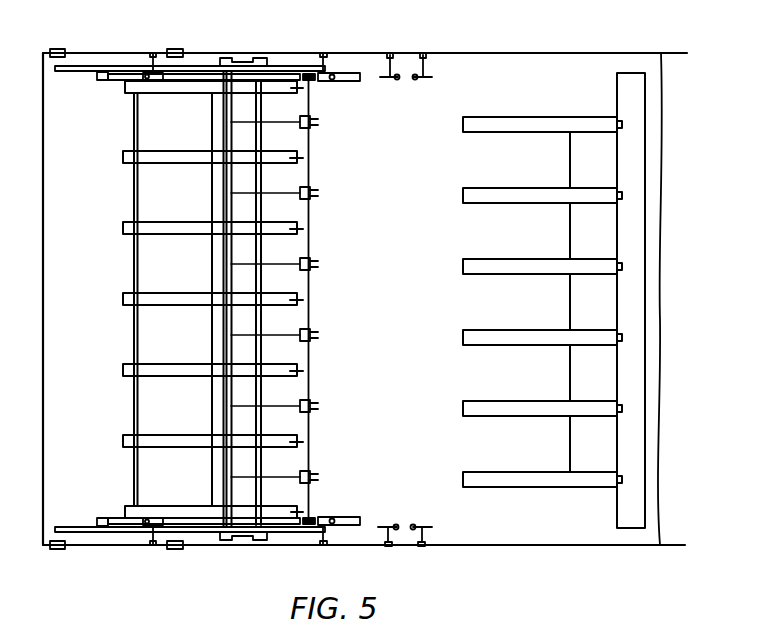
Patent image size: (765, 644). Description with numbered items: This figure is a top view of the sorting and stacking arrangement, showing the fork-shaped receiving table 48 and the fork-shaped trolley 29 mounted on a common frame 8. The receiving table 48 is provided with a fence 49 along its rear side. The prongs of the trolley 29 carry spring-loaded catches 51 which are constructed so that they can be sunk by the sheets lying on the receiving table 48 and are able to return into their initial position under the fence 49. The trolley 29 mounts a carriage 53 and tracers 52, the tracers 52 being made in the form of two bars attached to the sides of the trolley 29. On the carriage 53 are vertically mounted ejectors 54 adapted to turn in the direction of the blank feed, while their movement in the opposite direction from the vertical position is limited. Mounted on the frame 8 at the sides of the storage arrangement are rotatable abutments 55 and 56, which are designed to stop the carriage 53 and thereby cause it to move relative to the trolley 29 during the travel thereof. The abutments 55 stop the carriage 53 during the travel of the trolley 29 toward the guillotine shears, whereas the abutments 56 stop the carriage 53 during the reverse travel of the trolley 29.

The frame 8 is at (672, 53).
The trolley 29 is at (147, 201).
The receiving table 48 is at (552, 479).
The fence 49 is at (627, 514).
The spring-loaded catches 51 is at (300, 231).
The tracers 52 is at (118, 76).
The carriage 53 is at (222, 489).
The ejectors 54 is at (310, 123).
The rotatable abutments 55 is at (423, 55).
The rotatable abutments 56 is at (423, 80).